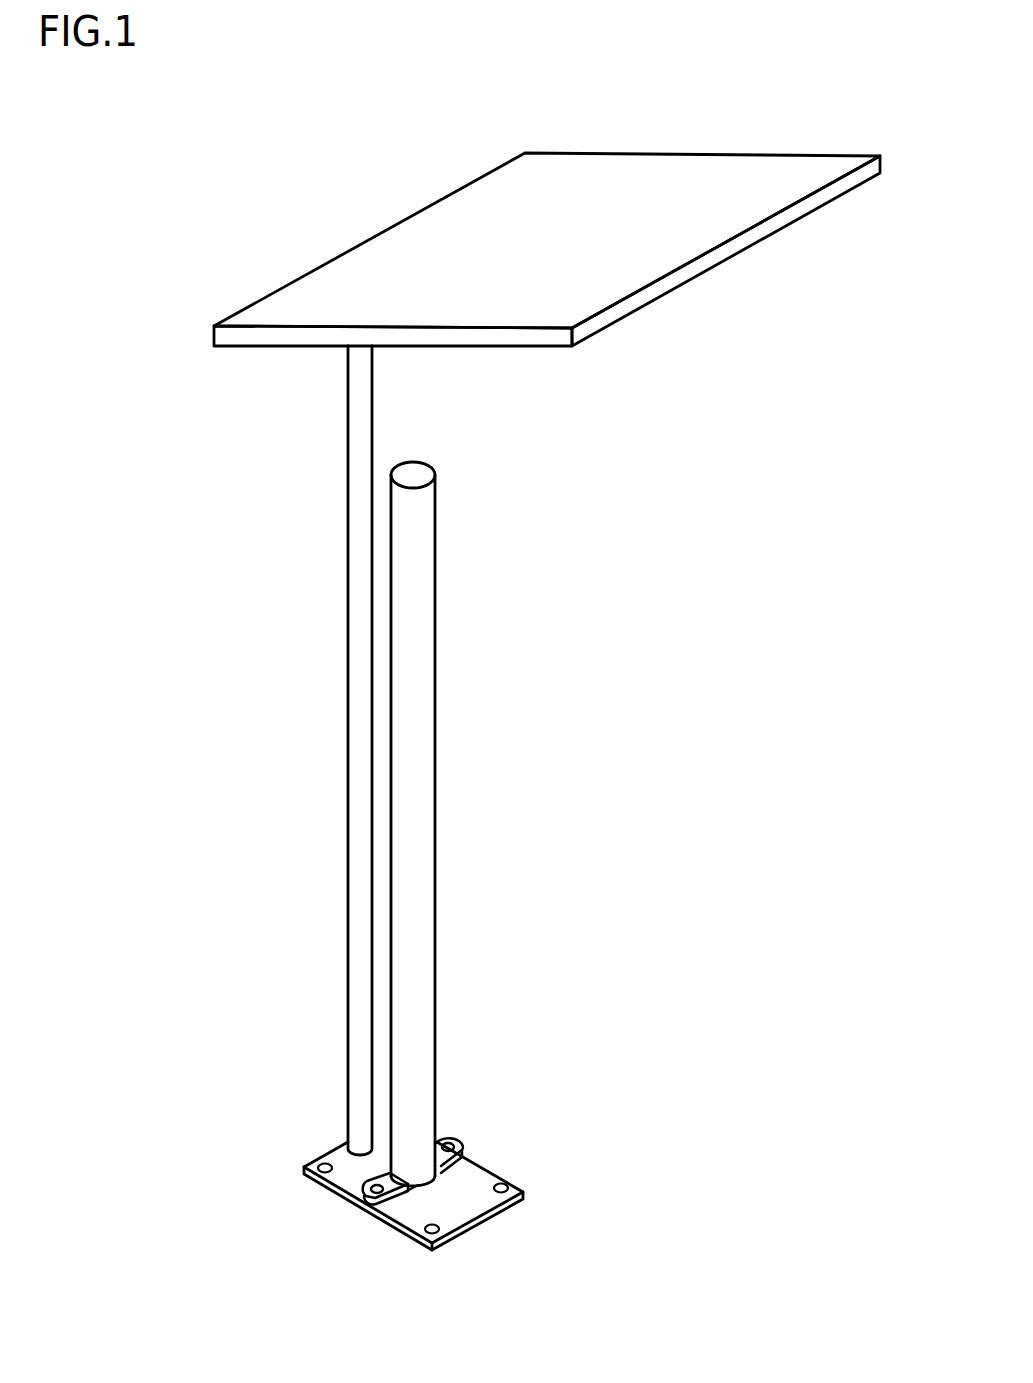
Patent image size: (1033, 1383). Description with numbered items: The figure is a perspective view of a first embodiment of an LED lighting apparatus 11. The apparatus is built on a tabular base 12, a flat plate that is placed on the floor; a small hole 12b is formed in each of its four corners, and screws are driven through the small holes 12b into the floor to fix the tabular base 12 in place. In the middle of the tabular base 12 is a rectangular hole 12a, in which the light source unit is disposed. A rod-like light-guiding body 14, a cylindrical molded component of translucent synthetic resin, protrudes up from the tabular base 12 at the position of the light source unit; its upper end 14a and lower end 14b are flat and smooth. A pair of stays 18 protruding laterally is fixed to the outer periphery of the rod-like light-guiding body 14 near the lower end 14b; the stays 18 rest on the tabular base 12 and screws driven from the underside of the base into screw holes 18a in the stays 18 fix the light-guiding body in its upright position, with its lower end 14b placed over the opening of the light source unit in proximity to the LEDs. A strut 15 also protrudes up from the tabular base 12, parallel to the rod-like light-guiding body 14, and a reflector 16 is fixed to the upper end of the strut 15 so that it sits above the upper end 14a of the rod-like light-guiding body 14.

The LED lighting apparatus 11 is at (327, 124).
The tabular base 12 is at (412, 1208).
The rectangular hole 12a is at (413, 1197).
The small hole 12b is at (312, 1158).
The rod-like light-guiding body 14 is at (471, 862).
The upper end 14a is at (418, 472).
The lower end 14b is at (428, 1183).
The strut 15 is at (348, 725).
The reflector 16 is at (730, 180).
The stay 18 is at (452, 1140).
The screw hole 18a is at (362, 1183).